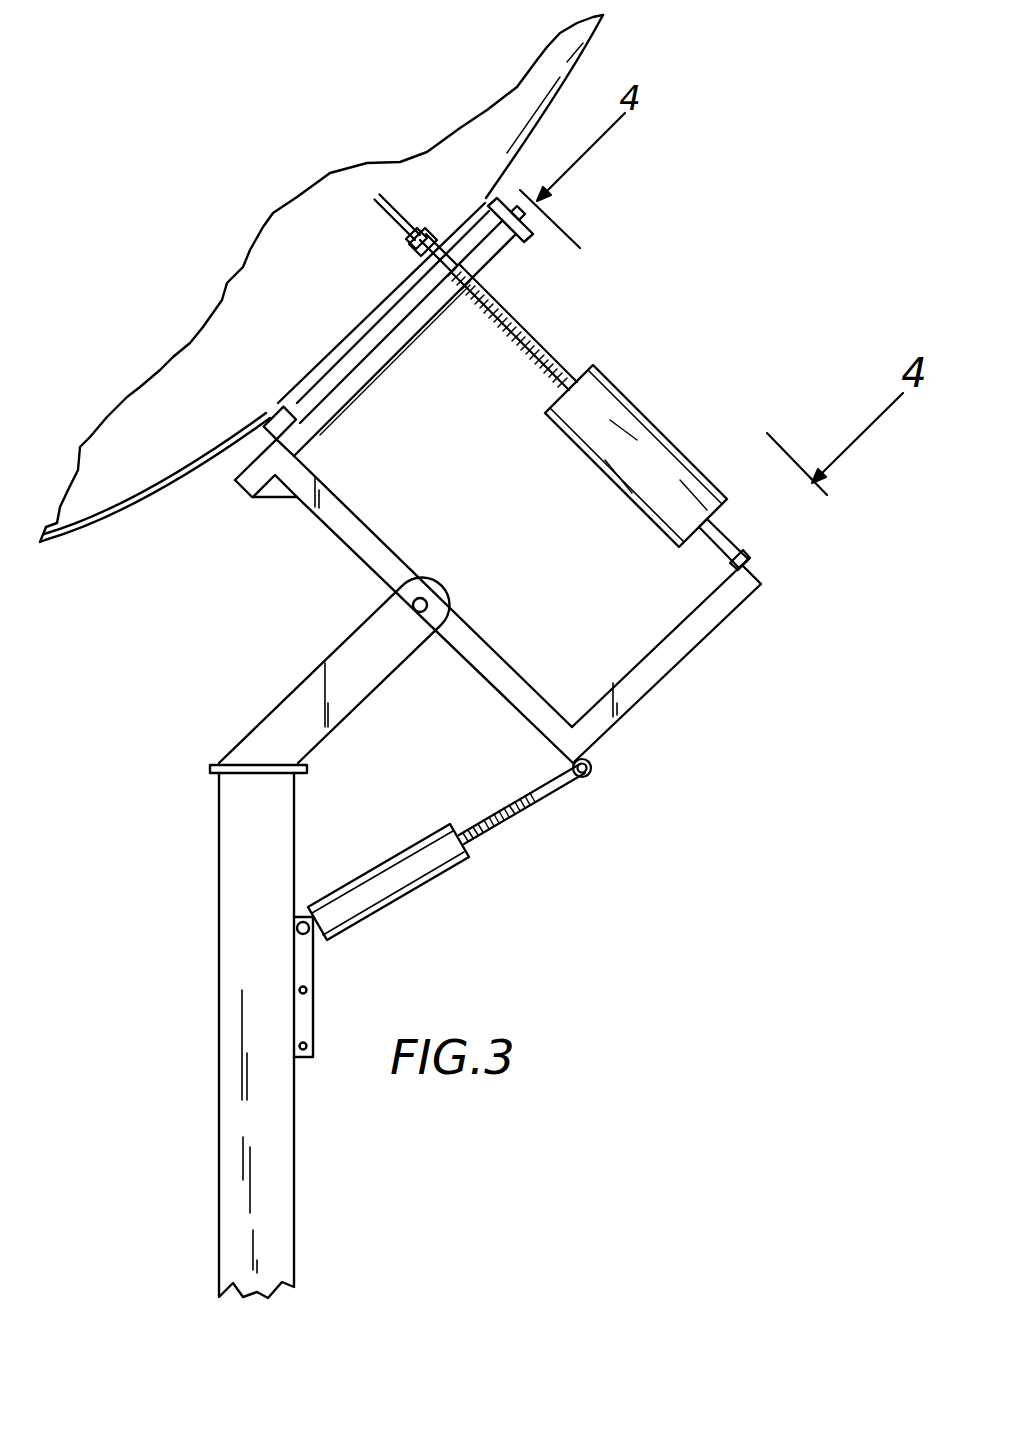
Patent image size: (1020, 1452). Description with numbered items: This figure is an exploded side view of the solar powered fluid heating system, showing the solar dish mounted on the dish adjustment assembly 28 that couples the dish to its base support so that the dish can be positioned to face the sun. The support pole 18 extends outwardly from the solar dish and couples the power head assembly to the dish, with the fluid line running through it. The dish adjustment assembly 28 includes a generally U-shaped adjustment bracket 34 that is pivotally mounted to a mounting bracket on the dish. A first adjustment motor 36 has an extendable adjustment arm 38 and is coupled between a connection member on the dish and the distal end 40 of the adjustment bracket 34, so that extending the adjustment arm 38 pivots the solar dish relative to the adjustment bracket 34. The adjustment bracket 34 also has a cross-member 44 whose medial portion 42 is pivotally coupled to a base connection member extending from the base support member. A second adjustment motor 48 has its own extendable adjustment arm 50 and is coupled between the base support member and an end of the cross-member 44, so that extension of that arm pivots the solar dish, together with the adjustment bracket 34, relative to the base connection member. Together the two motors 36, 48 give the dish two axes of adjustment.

The support pole 18 is at (218, 1073).
The dish adjustment assembly 28 is at (672, 403).
The adjustment bracket 34 is at (655, 668).
The first adjustment motor 36 is at (708, 483).
The adjustment arm 38 is at (516, 330).
The distal end 40 is at (762, 574).
The medial portion 42 is at (447, 645).
The cross-member 44 is at (490, 690).
The second adjustment motor 48 is at (397, 900).
The adjustment arm 50 is at (538, 805).